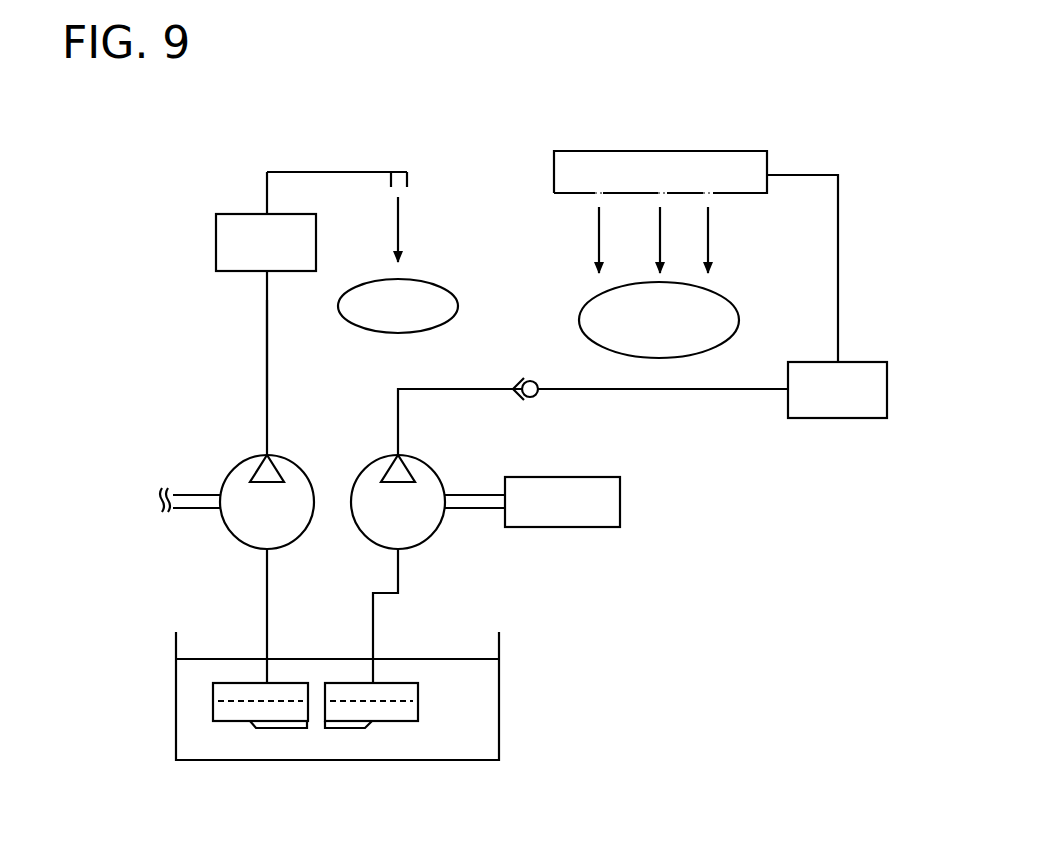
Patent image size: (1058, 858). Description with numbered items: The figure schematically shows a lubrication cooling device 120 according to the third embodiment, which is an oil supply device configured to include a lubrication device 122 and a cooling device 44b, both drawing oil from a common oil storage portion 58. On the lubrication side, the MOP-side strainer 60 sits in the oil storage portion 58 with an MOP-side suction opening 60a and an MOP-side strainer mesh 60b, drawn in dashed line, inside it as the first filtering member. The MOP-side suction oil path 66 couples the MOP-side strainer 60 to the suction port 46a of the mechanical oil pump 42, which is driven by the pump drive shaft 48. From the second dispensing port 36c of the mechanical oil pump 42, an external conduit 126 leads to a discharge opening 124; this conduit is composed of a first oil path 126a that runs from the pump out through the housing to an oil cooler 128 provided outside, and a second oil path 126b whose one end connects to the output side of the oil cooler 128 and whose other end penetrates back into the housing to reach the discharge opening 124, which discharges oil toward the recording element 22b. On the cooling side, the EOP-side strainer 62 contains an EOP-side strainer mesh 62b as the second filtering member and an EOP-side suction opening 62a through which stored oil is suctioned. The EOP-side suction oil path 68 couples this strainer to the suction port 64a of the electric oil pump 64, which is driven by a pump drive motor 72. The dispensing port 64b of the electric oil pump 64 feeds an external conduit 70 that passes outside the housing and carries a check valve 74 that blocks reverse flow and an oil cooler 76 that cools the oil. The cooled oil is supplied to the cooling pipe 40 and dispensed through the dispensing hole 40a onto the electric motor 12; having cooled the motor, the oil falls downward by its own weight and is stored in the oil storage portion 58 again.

The lubrication cooling device 120 is at (512, 97).
The external conduit 126 is at (296, 162).
The second oil path 126b is at (355, 172).
The discharge opening 124 is at (420, 198).
The oil cooler 128 is at (242, 230).
The lubrication device 122 is at (180, 338).
The first oil path 126a is at (265, 352).
The second recording medium 22b is at (430, 300).
The cooling pipe 40 is at (622, 162).
The dispensing hole 40a is at (672, 180).
The cooling device 44b is at (875, 232).
The electric motor 12 is at (718, 317).
The second dispensing port 36c is at (264, 455).
The dispensing port 64b is at (395, 455).
The electric oil pump 64 is at (432, 483).
The mechanical oil pump 42 is at (237, 488).
The check valve 74 is at (535, 405).
The external conduit 70 is at (648, 390).
The pump drive motor 72 is at (595, 487).
The oil cooler 76 is at (845, 400).
The pump drive shaft 48 is at (193, 508).
The MOP-side suction oil path 66 is at (265, 588).
The suction port 46a is at (272, 552).
The suction port 64a is at (402, 552).
The MOP-side strainer 60 is at (240, 670).
The EOP-side suction oil path 68 is at (370, 646).
The EOP-side strainer 62 is at (395, 675).
The MOP-side strainer mesh 60b is at (229, 703).
The MOP-side suction opening 60a is at (278, 730).
The EOP-side suction opening 62a is at (343, 730).
The EOP-side strainer mesh 62b is at (388, 703).
The oil storage portion 58 is at (468, 745).